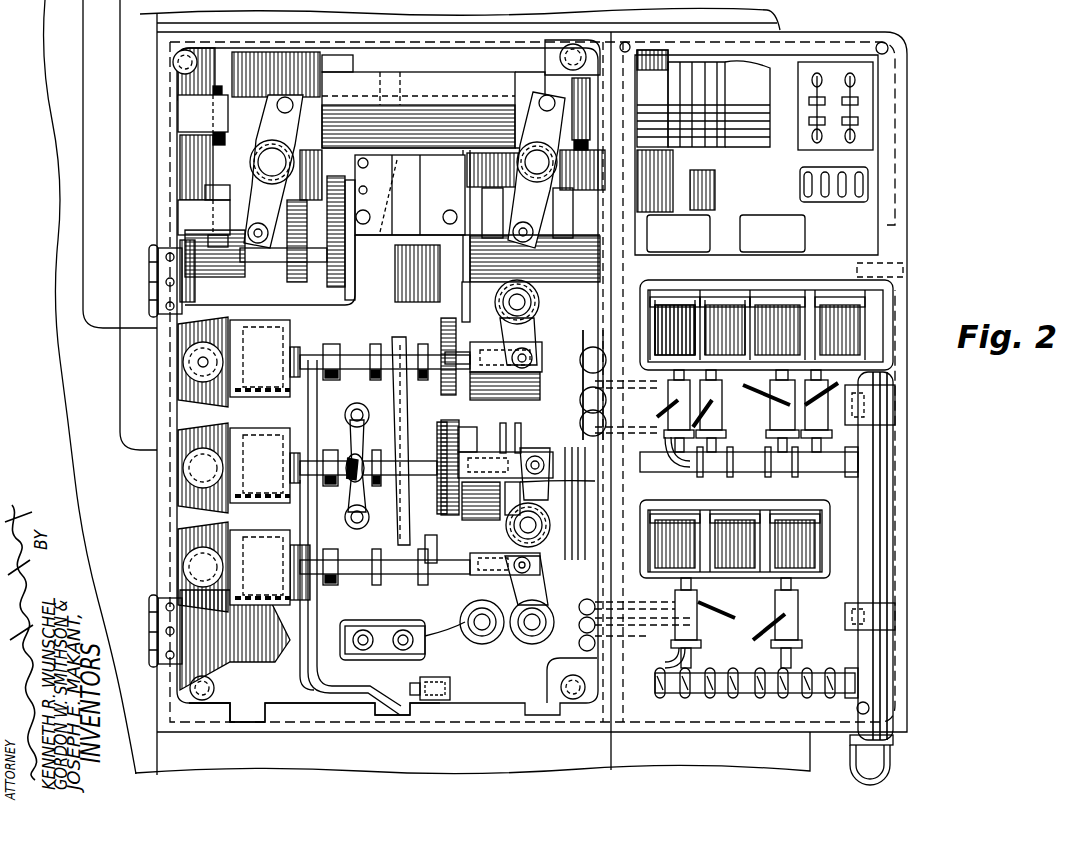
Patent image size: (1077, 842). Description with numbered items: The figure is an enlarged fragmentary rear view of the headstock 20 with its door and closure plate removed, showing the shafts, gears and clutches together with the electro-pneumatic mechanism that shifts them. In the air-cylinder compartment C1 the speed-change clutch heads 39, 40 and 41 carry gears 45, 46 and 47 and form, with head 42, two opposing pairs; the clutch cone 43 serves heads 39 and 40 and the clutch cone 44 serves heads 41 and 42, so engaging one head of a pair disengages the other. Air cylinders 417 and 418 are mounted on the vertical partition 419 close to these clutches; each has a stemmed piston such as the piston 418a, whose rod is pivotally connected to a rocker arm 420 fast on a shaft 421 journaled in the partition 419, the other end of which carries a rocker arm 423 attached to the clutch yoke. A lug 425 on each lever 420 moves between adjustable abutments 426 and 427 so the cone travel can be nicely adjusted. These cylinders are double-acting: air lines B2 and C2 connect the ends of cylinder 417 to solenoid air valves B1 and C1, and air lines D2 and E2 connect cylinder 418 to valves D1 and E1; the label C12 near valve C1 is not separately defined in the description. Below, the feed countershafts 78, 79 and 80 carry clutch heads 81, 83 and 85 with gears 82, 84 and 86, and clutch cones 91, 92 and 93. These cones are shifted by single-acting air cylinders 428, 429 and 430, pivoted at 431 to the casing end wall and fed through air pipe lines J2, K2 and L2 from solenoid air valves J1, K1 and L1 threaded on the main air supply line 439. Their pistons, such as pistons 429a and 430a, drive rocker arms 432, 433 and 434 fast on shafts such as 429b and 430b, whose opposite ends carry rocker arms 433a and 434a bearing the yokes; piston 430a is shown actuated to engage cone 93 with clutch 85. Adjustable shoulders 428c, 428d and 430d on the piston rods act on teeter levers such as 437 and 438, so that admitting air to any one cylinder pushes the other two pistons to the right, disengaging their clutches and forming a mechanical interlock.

The headstock 20 is at (60, 185).
The air line B2 is at (305, 80).
The rocker arm 420 is at (283, 126).
The adjustable abutment 426 is at (215, 142).
The projecting lug 425 is at (215, 160).
The gear 45 is at (213, 190).
The adjustable abutment 427 is at (213, 210).
The stemmed piston 418a is at (518, 100).
The air cylinder 417 is at (410, 195).
The air line C2 is at (392, 180).
The air line D2 is at (418, 185).
The air cylinder 418 is at (460, 195).
The clutch head 41 is at (477, 243).
The shaft 421 is at (560, 135).
The clutch head 42 is at (563, 223).
The gear 46 is at (340, 290).
The clutch head 40 is at (330, 290).
The clutch cone 43 is at (262, 270).
The clutch head 39 is at (222, 287).
The vertical partition 419 is at (423, 273).
The gear 47 is at (458, 282).
The rocker arm 423 is at (500, 295).
The clutch cone 44 is at (537, 290).
The rocker arm 432 is at (537, 325).
The countershaft 78 is at (545, 350).
The gear 82 is at (470, 305).
The air cylinder 428 is at (232, 330).
The adjustable shoulder 428c is at (376, 345).
The abutment shoulder 428d is at (422, 345).
The pivot mounting 431 is at (203, 362).
The air cylinder 429 is at (365, 388).
The teeter lever 437 is at (352, 505).
The piston 429a is at (350, 440).
The teeter lever 438 is at (410, 395).
The air cylinder 430 is at (262, 540).
The piston 430a is at (350, 548).
The gear 84 is at (450, 458).
The clutch head 83 is at (466, 428).
The clutch head 81 is at (503, 423).
The clutch cone 92 is at (518, 440).
The clutch cone 91 is at (525, 425).
The countershaft 79 is at (548, 455).
The rocker arm 433 is at (545, 493).
The rocker arm 433a is at (596, 481).
The shaft 429b is at (550, 530).
The gear 86 is at (425, 535).
The clutch head 85 is at (470, 535).
The clutch cone 93 is at (502, 535).
The air pipe line K2 is at (302, 600).
The air pipe line L2 is at (320, 620).
The abutment shoulder 430d is at (405, 620).
The countershaft 80 is at (545, 568).
The rocker arm 434 is at (540, 594).
The shaft 430b is at (540, 640).
The rocker arm 434a is at (498, 642).
The solenoid air valve C1 is at (250, 712).
The solenoid air valve B1 is at (688, 320).
The solenoid air valve D1 is at (770, 330).
The solenoid air valve E1 is at (830, 330).
The solenoid air valve J1 is at (668, 530).
The solenoid air valve K1 is at (742, 522).
The solenoid air valve L1 is at (778, 525).
The valve C12 is at (712, 407).
The air line E2 is at (826, 393).
The air pipe line J2 is at (672, 655).
The main air pressure supply line 439 is at (885, 530).